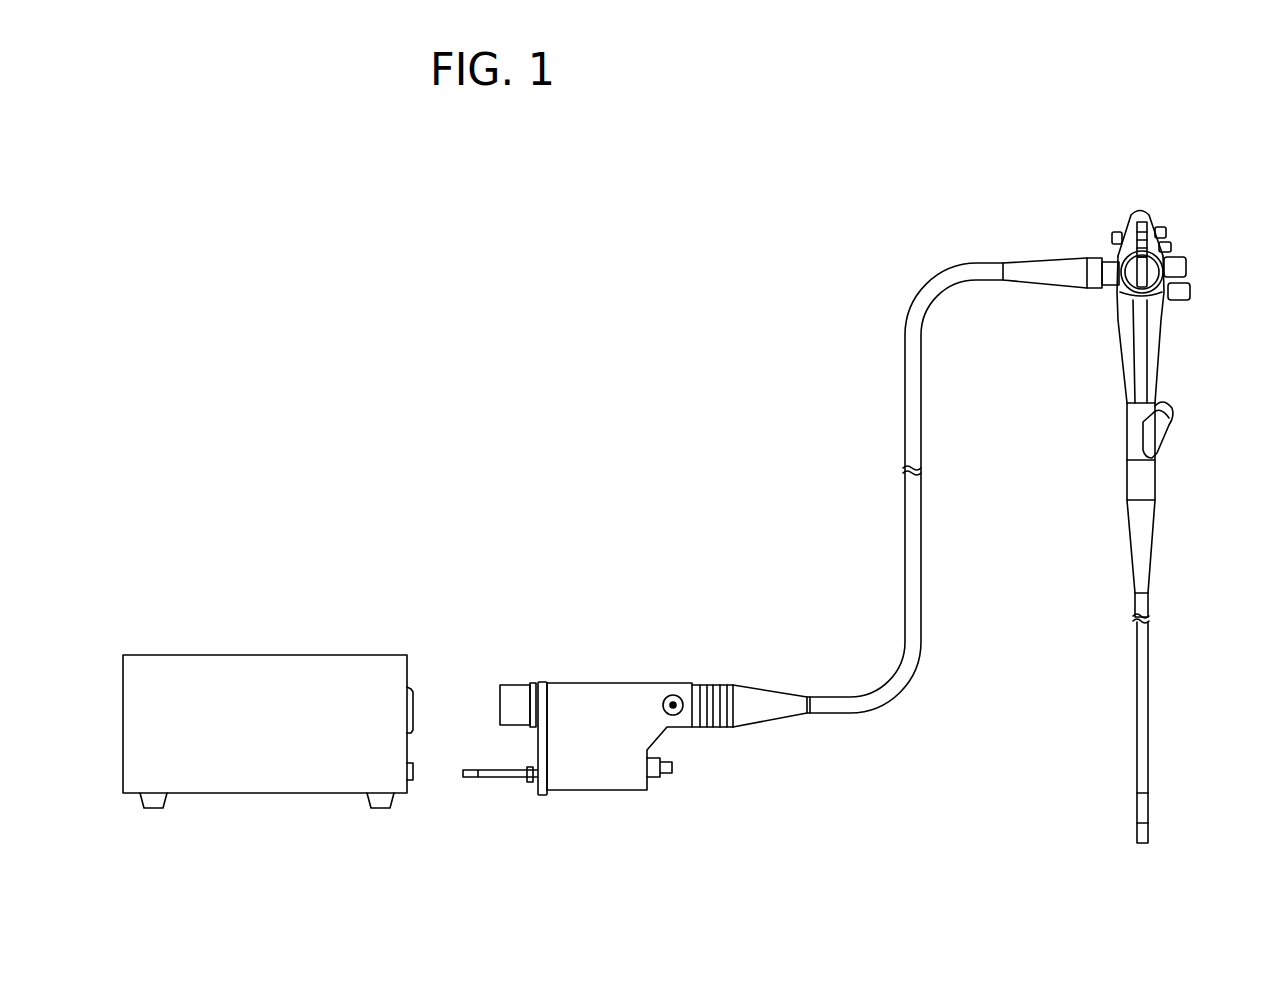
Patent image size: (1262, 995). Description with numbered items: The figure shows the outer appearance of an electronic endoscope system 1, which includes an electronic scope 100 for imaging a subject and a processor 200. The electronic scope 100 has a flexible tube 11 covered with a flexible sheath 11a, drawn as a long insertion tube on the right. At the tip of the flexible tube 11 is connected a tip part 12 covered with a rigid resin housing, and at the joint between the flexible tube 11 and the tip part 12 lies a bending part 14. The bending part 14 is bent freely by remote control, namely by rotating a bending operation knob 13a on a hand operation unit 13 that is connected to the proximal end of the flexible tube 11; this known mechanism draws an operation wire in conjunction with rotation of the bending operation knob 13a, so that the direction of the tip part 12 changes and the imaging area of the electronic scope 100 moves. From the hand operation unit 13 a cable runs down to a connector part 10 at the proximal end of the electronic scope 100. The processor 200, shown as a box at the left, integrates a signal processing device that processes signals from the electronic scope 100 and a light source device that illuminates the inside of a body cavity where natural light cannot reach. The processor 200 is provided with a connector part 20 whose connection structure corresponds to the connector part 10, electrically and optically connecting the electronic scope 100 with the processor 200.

The electronic endoscope system 1 is at (593, 352).
The connector part 10 is at (625, 673).
The flexible tube 11 is at (1190, 693).
The flexible sheath 11a is at (1146, 708).
The tip part 12 is at (1138, 834).
The hand operation unit 13 is at (1171, 235).
The bending operation knob 13a is at (1137, 238).
The bending part 14 is at (1147, 808).
The connector part 20 is at (424, 751).
The electronic scope 100 is at (945, 226).
The processor 200 is at (257, 648).